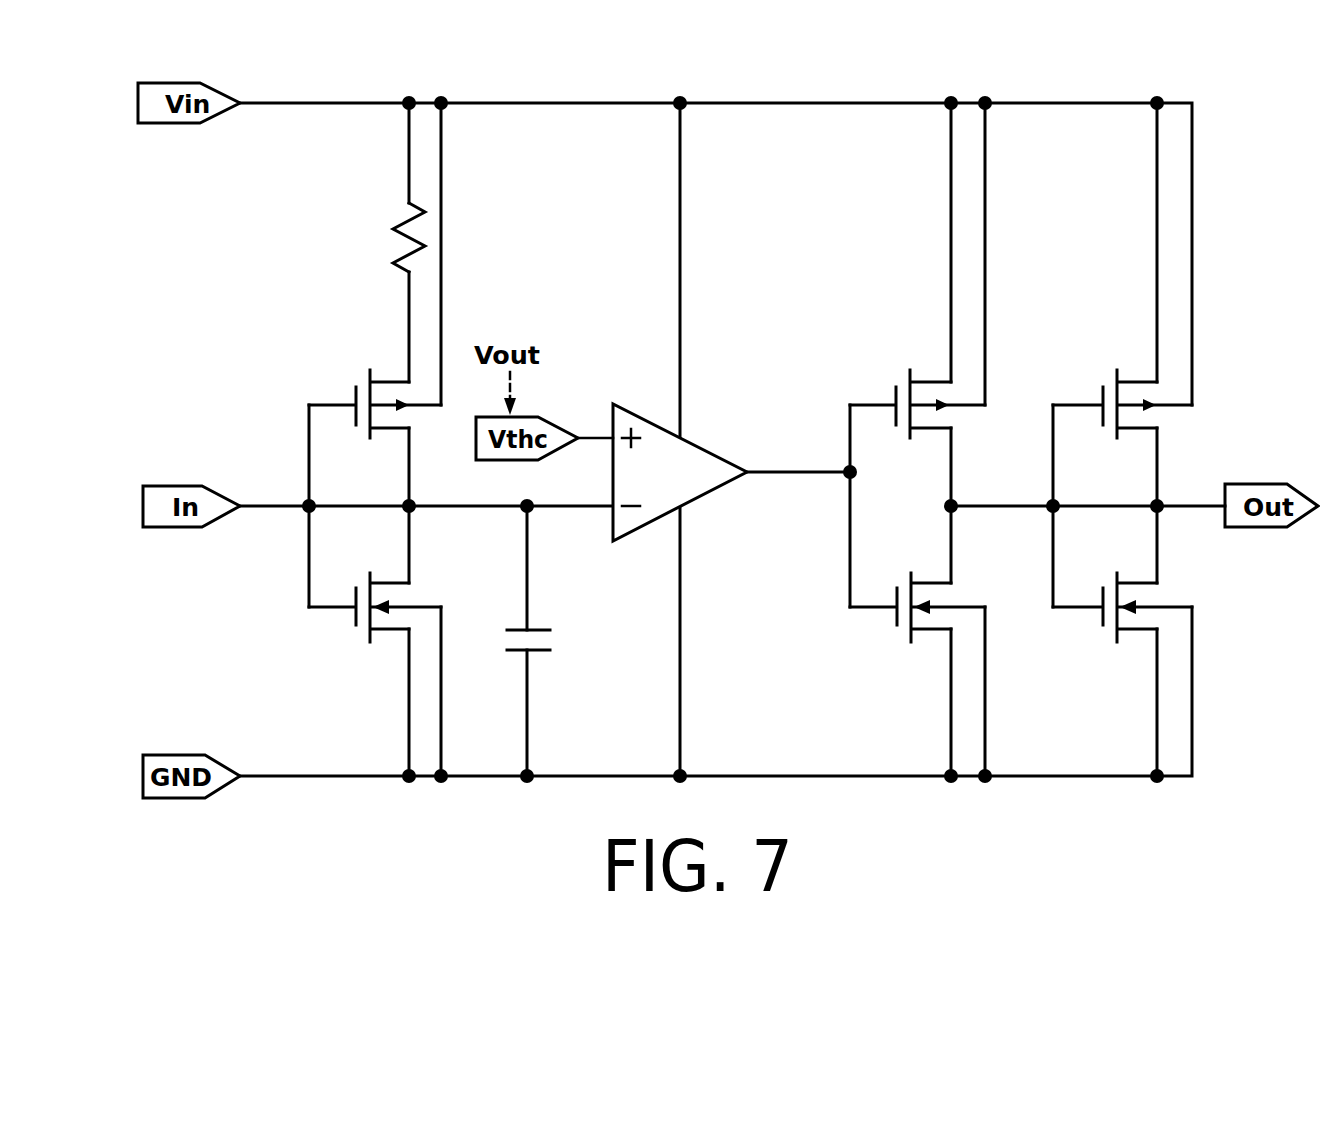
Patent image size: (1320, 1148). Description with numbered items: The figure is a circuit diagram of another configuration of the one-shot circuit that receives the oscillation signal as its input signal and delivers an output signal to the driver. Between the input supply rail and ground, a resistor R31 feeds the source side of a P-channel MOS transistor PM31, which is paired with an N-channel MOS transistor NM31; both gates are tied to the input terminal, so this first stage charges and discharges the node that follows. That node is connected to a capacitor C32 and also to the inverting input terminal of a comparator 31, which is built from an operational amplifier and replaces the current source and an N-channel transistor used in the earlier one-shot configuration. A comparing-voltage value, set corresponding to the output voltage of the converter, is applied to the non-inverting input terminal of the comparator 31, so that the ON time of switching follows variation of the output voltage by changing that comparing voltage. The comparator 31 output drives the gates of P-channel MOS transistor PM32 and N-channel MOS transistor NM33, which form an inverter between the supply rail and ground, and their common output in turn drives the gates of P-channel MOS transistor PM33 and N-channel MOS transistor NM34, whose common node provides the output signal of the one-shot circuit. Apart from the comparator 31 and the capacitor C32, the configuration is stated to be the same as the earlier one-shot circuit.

The resistor R31 is at (392, 229).
The P-channel MOS transistor PM31 is at (357, 371).
The N-channel MOS transistor NM31 is at (360, 634).
The capacitor C32 is at (551, 640).
The comparator 31 is at (712, 450).
The P-channel MOS transistor PM32 is at (897, 380).
The N-channel MOS transistor NM33 is at (900, 635).
The P-channel MOS transistor PM33 is at (1102, 380).
The N-channel MOS transistor NM34 is at (1106, 635).